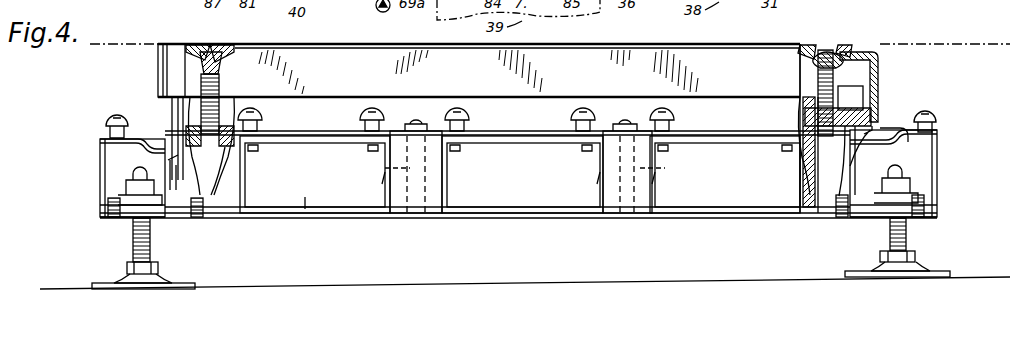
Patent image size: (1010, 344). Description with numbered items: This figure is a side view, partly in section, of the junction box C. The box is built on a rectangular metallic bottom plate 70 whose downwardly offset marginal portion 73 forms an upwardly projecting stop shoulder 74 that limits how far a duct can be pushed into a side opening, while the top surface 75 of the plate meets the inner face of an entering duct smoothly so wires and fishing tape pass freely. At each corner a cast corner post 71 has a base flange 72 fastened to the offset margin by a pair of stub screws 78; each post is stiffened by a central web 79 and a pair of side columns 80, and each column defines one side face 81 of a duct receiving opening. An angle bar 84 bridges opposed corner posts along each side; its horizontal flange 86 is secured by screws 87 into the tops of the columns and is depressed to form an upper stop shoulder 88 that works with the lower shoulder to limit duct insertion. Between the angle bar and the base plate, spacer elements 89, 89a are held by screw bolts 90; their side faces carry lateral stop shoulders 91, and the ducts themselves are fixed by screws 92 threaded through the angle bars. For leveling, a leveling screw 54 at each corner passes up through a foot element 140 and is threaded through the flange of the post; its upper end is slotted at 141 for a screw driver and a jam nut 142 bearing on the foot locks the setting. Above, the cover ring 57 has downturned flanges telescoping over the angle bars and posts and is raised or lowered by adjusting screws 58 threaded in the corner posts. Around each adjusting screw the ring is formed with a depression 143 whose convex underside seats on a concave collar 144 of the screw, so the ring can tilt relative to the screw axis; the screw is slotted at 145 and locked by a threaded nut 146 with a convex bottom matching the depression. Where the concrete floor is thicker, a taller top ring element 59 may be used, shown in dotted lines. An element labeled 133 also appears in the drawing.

The leveling screw 54 is at (133, 240).
The cover ring 57 is at (528, 74).
The adjusting screw 58 is at (219, 87).
The top ring element of additional height 59 is at (882, 108).
The bottom plate 70 is at (495, 218).
The corner post 71 is at (170, 128).
The base flange 72 is at (101, 205).
The downwardly offset marginal portion 73 is at (318, 225).
The stop shoulder 74 is at (345, 215).
The top surface 75 is at (337, 203).
The stub screw 78 is at (112, 217).
The central web 79 is at (170, 212).
The side column 80 is at (102, 176).
The side face 81 is at (803, 161).
The angle bar 84 is at (553, 118).
The horizontal flange 86 is at (102, 152).
The screw 87 is at (104, 120).
The upper stop shoulder 88 is at (280, 140).
The spacer element 89 is at (605, 215).
The spacer element 89a is at (400, 215).
The screw bolt 90 is at (420, 167).
The lateral stop shoulder 91 is at (451, 116).
The screw 92 is at (360, 121).
The pin 133 is at (305, 213).
The foot element 140 is at (190, 283).
The slot 141 is at (142, 174).
The jam nut 142 is at (160, 266).
The depression 143 is at (228, 60).
The concave collar 144 is at (195, 65).
The slot 145 is at (205, 47).
The threaded nut 146 is at (222, 52).
The junction box C is at (956, 167).